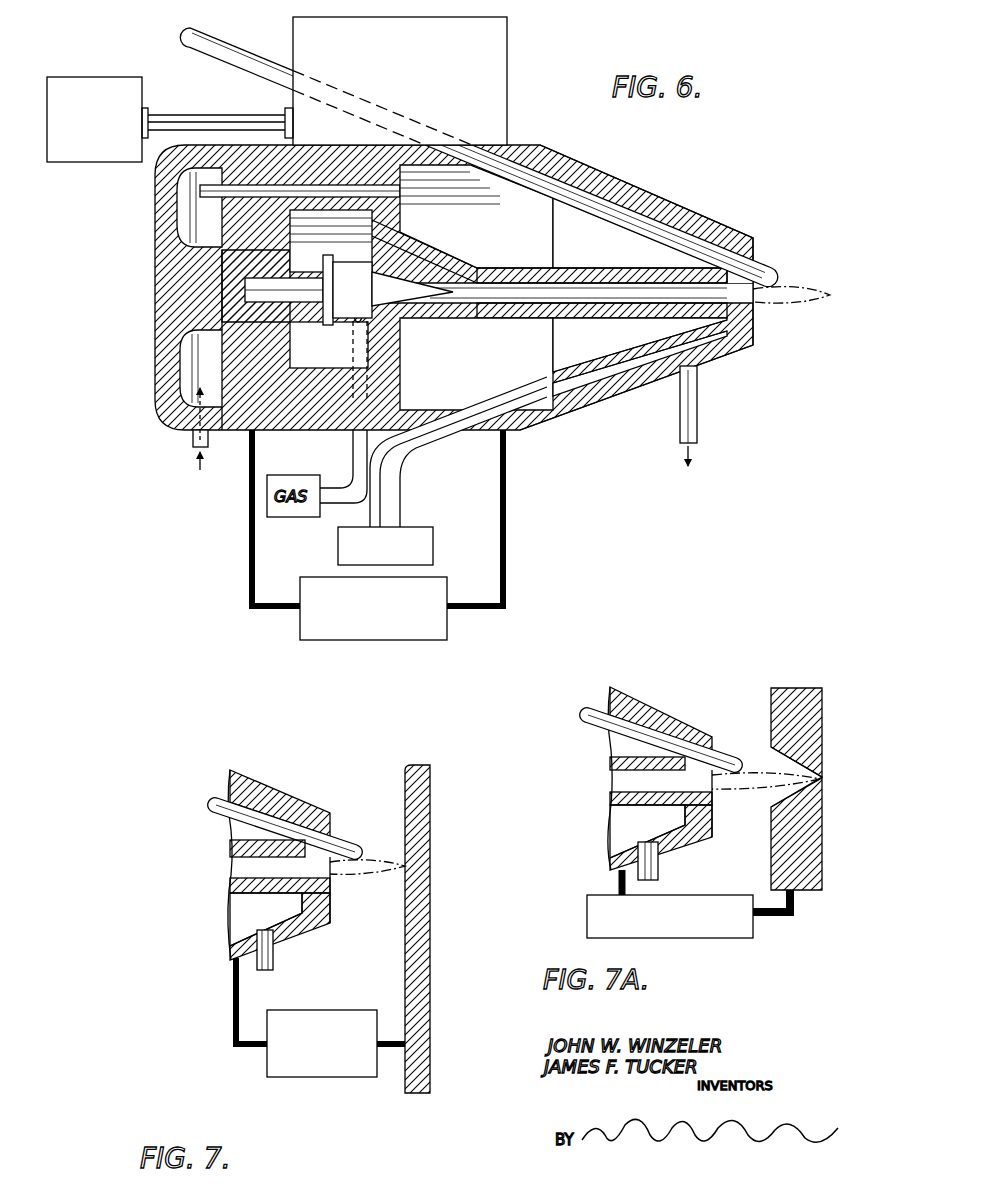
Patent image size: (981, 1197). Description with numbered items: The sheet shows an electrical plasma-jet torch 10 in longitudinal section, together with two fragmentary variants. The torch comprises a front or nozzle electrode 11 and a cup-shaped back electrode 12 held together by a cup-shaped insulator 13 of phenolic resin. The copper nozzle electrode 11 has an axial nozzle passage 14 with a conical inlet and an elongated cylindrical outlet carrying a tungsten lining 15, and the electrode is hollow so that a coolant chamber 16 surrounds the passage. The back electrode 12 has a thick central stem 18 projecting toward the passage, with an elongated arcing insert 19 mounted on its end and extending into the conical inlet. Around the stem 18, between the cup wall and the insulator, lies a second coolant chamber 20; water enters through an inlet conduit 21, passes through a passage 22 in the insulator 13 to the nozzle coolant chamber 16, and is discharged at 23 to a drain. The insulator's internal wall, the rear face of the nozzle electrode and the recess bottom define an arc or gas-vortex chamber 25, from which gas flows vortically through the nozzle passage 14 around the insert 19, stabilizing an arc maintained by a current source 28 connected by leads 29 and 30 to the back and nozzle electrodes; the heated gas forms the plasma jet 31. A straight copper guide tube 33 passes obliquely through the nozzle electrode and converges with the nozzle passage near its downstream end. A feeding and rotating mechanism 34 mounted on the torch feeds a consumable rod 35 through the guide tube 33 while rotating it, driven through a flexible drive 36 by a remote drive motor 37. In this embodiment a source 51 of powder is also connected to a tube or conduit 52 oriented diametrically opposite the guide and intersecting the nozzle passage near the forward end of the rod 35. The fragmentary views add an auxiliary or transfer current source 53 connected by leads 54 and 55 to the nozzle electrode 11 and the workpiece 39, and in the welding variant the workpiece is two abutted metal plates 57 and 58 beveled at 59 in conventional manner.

In FIG. 6, the electrical plasma-jet torch 10 is at (622, 178).
In FIG. 7, the electrical plasma-jet torch 10 is at (263, 782).
In FIG. 7A, the electrical plasma-jet torch 10 is at (655, 698).
In FIG. 6, the front or nozzle electrode 11 is at (583, 410).
In FIG. 7, the front or nozzle electrode 11 is at (308, 928).
In FIG. 7A, the front or nozzle electrode 11 is at (672, 857).
In FIG. 6, the back electrode 12 is at (172, 412).
In FIG. 6, the cup-shaped insulator 13 is at (312, 418).
In FIG. 6, the nozzle passage 14 is at (628, 297).
In FIG. 7, the nozzle passage 14 is at (253, 863).
In FIG. 7A, the nozzle passage 14 is at (622, 782).
In FIG. 6, the lining 15 is at (576, 312).
In FIG. 7, the lining 15 is at (233, 850).
In FIG. 7A, the lining 15 is at (617, 768).
In FIG. 6, the coolant chamber 16 is at (476, 216).
In FIG. 7, the coolant chamber 16 is at (247, 925).
In FIG. 7A, the coolant chamber 16 is at (622, 835).
In FIG. 6, the central stem 18 is at (180, 275).
In FIG. 6, the insert or arcing portion 19 is at (422, 307).
In FIG. 6, the coolant chamber 20 is at (195, 357).
In FIG. 6, the inlet conduit 21 is at (193, 440).
In FIG. 6, the passage 22 is at (298, 185).
In FIG. 6, the water discharge 23 is at (700, 413).
In FIG. 7, the water discharge 23 is at (277, 955).
In FIG. 7A, the water discharge 23 is at (658, 870).
In FIG. 6, the arc or gas-vortex chamber 25 is at (331, 305).
In FIG. 6, the current source 28 is at (403, 641).
In FIG. 6, the lead 29 is at (250, 572).
In FIG. 6, the lead 30 is at (508, 527).
In FIG. 6, the plasma jet 31 is at (799, 303).
In FIG. 7, the plasma jet 31 is at (392, 880).
In FIG. 7A, the plasma jet 31 is at (757, 793).
In FIG. 6, the tubular passage or guide 33 is at (633, 231).
In FIG. 6, the feeding and rotating mechanism 34 is at (480, 107).
In FIG. 6, the consumable rod 35 is at (683, 243).
In FIG. 7, the consumable rod 35 is at (285, 825).
In FIG. 7A, the consumable rod 35 is at (655, 738).
In FIG. 6, the flexible drive 36 is at (182, 118).
In FIG. 6, the drive motor 37 is at (95, 78).
In FIG. 7, the workpiece 39 is at (405, 773).
In FIG. 6, the source of powder 51 is at (435, 538).
In FIG. 6, the tube or conduit 52 is at (490, 398).
In FIG. 7, the auxiliary or transfer current source 53 is at (315, 1078).
In FIG. 7A, the auxiliary or transfer current source 53 is at (737, 938).
In FIG. 7, the lead 54 is at (233, 1003).
In FIG. 7A, the lead 54 is at (615, 878).
In FIG. 7, the lead 55 is at (397, 1052).
In FIG. 7A, the lead 55 is at (783, 925).
In FIG. 7A, the metal plate 57 is at (790, 690).
In FIG. 7A, the metal plate 58 is at (797, 903).
In FIG. 7A, the bevel 59 is at (775, 798).